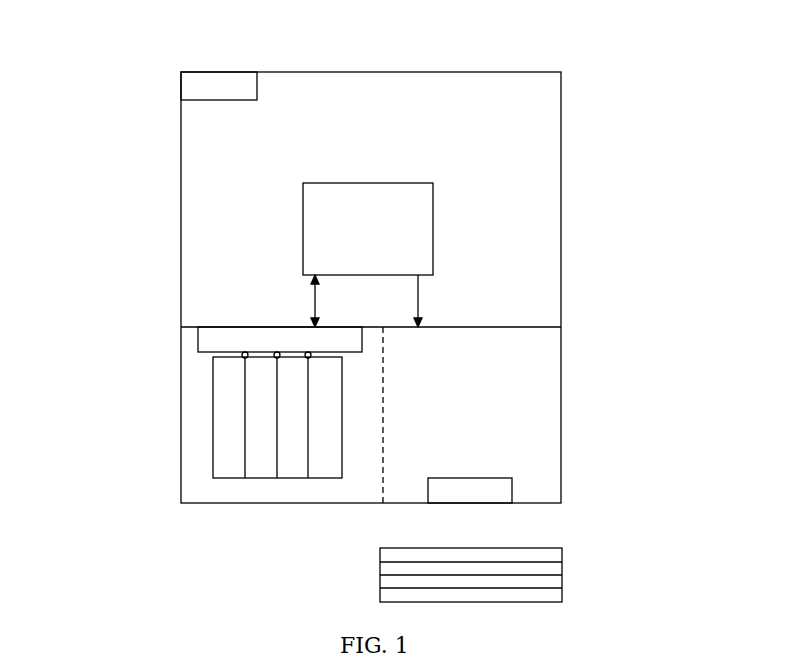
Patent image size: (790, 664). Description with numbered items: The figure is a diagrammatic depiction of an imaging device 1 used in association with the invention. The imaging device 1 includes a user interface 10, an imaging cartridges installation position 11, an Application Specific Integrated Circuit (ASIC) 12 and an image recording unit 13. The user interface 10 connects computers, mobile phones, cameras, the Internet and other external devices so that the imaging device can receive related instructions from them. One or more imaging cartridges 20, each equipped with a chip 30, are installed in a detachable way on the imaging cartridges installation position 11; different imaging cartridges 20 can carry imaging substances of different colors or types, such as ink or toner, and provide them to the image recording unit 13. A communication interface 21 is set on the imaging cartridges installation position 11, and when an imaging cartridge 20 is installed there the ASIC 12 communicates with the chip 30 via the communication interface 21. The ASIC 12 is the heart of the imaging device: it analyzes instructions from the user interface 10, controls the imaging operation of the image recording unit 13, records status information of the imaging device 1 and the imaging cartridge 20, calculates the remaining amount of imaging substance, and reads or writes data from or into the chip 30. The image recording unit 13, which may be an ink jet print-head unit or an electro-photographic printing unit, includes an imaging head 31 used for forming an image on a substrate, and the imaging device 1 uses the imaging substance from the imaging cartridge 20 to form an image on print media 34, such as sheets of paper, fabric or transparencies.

The imaging device 1 is at (561, 107).
The user interface 10 is at (214, 88).
The imaging cartridges installation position 11 is at (178, 443).
The Application Specific Integrated Circuit (ASIC) 12 is at (433, 228).
The image recording unit 13 is at (562, 395).
The imaging cartridge 20 is at (227, 458).
The communication interface 21 is at (204, 334).
The chip 30 is at (242, 355).
The imaging head 31 is at (497, 495).
The print media 34 is at (562, 560).